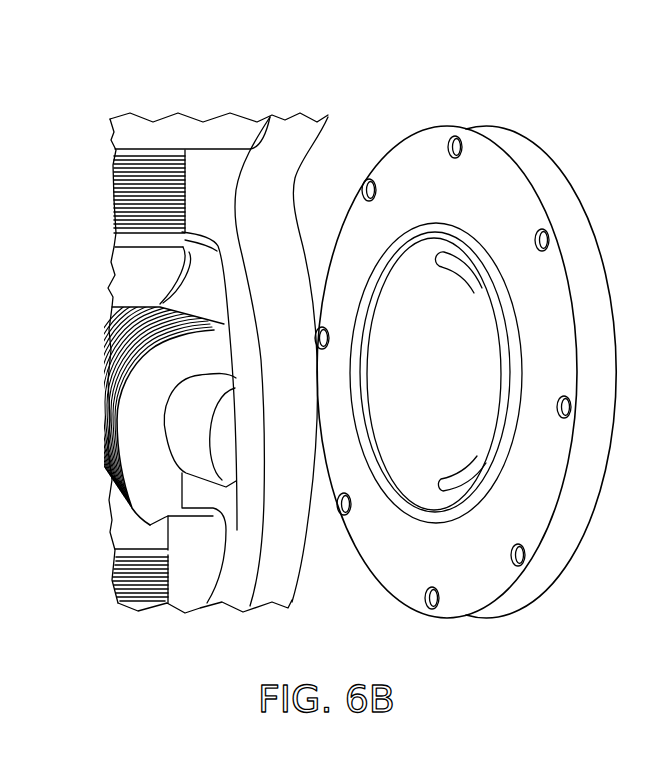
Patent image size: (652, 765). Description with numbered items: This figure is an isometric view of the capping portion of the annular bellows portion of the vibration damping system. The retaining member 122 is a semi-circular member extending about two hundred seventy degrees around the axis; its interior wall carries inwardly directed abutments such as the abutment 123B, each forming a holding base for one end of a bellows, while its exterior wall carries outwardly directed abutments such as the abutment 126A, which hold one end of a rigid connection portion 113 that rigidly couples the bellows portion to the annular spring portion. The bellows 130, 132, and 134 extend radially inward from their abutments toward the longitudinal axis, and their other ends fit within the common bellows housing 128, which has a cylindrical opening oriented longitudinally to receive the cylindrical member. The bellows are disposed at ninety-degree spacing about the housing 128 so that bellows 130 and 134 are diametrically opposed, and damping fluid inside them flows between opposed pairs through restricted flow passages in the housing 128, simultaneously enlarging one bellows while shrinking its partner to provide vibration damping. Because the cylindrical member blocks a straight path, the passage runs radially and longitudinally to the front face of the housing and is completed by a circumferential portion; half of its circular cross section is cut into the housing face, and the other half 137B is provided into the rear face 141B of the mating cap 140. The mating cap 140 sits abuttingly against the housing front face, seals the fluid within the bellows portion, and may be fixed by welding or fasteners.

The rigid connection portion 113 is at (183, 356).
The outwardly directed abutment 126A is at (293, 123).
The retaining member 122 is at (282, 215).
The bellows 134 is at (120, 197).
The bellows housing 128 is at (118, 288).
The bellows 132 is at (122, 428).
The inwardly directed abutment 123B is at (188, 490).
The bellows 130 is at (120, 600).
The mating cap 140 is at (473, 362).
The rear face 141B is at (480, 178).
The half of circumferential portion 137B is at (478, 282).